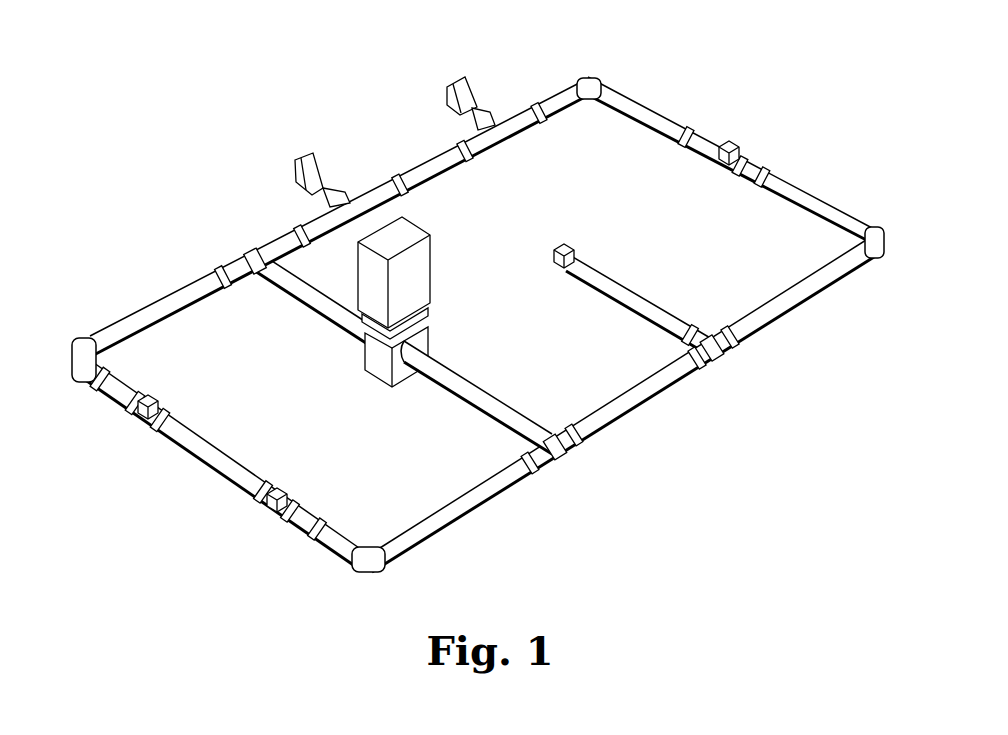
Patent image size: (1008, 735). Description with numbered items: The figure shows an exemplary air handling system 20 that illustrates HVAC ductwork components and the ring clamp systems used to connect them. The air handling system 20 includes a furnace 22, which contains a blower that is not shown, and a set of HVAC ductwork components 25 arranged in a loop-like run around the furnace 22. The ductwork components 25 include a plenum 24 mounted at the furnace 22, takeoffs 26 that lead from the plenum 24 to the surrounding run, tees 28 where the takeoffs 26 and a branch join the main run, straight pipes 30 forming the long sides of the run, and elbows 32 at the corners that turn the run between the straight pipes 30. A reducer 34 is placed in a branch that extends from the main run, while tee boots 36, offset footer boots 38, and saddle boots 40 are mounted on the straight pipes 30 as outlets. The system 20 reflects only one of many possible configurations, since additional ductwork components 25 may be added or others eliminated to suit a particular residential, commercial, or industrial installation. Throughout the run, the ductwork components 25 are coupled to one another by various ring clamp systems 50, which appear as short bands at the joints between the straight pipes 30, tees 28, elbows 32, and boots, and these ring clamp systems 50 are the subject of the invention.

The air handling system 20 is at (271, 111).
The furnace 22 is at (420, 280).
The plenum 24 is at (370, 362).
The ductwork components 25 is at (447, 71).
The takeoffs 26 is at (340, 325).
The tees 28 is at (253, 252).
The straight pipes 30 is at (160, 298).
The elbows 32 is at (592, 80).
The reducer 34 is at (679, 326).
The tee boots 36 is at (741, 138).
The offset footer boots 38 is at (312, 162).
The saddle boots 40 is at (141, 414).
The ring clamp systems 50 is at (418, 192).